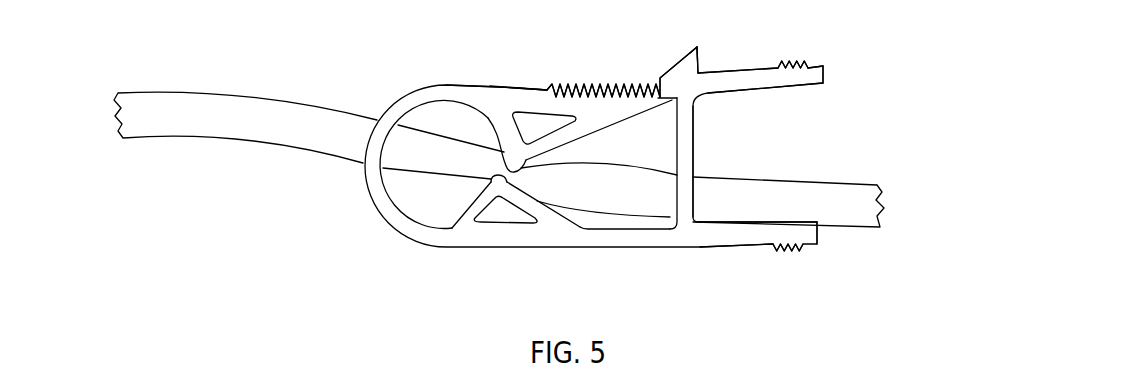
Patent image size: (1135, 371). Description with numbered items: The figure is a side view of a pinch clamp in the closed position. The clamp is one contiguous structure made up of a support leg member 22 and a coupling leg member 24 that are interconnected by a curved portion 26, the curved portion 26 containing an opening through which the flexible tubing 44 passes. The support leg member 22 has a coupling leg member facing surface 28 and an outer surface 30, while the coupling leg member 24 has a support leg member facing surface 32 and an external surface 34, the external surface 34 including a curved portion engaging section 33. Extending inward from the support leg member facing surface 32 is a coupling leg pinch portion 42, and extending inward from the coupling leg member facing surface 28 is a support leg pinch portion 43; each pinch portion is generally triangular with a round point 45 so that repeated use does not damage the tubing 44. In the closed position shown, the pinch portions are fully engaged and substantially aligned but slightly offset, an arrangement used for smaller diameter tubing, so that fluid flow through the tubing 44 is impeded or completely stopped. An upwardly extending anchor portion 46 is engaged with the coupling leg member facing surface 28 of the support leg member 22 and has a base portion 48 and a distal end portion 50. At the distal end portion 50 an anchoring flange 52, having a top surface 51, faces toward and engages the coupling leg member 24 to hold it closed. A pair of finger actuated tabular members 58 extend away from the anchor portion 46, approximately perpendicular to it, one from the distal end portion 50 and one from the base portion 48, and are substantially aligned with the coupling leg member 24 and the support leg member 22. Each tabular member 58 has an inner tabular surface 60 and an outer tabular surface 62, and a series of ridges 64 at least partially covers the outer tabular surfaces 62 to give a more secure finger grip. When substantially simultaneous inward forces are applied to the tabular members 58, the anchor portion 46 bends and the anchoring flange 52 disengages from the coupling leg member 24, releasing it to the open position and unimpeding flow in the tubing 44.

The support leg member 22 is at (651, 258).
The coupling leg member 24 is at (463, 74).
The curved portion 26 is at (352, 178).
The coupling leg member facing surface 28 is at (602, 227).
The outer surface 30 is at (613, 250).
The support leg member facing surface 32 is at (593, 137).
The curved portion engaging section 33 is at (532, 88).
The external surface 34 is at (507, 85).
The coupling leg pinch portion 42 is at (546, 148).
The support leg pinch portion 43 is at (484, 218).
The tubing 44 is at (253, 97).
The round point 45 is at (500, 165).
The anchor portion 46 is at (705, 156).
The base portion 48 is at (700, 222).
The distal end portion 50 is at (699, 72).
The top surface 51 is at (677, 61).
The anchoring flange 52 is at (667, 72).
The finger actuated tabular members 58 is at (826, 74).
The inner tabular surface 60 is at (778, 90).
The outer tabular surface 62 is at (735, 72).
The ridges 64 is at (563, 84).